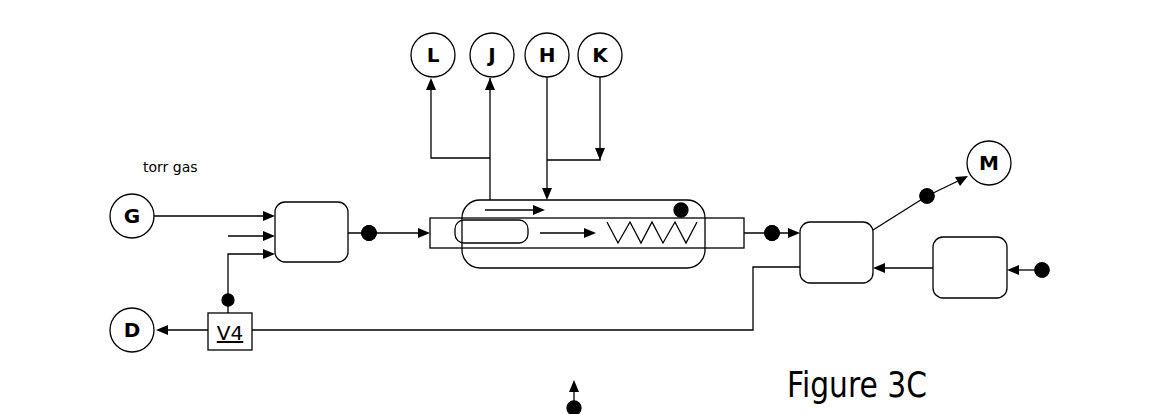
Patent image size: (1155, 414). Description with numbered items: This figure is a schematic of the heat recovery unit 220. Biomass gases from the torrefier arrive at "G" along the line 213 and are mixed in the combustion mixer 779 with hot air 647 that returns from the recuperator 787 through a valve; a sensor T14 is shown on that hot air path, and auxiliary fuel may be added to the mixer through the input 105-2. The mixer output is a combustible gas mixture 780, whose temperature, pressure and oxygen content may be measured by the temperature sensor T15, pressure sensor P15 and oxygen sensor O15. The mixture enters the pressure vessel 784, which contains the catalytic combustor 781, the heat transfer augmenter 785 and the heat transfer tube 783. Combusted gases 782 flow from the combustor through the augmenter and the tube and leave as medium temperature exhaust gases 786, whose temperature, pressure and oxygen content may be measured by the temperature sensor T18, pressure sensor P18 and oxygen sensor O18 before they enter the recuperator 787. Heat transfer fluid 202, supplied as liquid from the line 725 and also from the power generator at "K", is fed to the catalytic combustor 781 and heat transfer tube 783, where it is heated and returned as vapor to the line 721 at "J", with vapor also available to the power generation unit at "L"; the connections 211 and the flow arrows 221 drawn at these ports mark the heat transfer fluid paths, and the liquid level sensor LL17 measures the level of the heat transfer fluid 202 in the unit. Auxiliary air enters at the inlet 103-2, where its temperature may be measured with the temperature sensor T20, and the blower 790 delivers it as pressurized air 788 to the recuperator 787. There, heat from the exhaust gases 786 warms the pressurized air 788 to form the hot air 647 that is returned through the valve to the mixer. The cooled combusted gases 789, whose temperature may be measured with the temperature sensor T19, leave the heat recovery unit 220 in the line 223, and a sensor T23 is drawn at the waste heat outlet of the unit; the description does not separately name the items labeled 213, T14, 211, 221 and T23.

The heat recovery unit 220 is at (96, 76).
The torr gas feed line 213 is at (214, 207).
The input 105-2 is at (221, 236).
The hot air 647 is at (507, 289).
The temperature sensor T14 is at (235, 297).
The combustion mixer 779 is at (311, 232).
The combustible gas mixture 780 is at (389, 241).
The temperature sensor T15 is at (365, 171).
The pressure sensor P15 is at (365, 184).
The oxygen sensor O15 is at (375, 226).
The heat transfer fluid 202 is at (490, 212).
The pressure vessel 784 is at (600, 200).
The heat transfer tube 783 is at (722, 218).
The catalytic combustor 781 is at (510, 247).
The combusted gases 782 is at (567, 240).
The heat transfer augmenter 785 is at (632, 228).
The liquid level sensor LL17 is at (692, 205).
The coolant lines 211 is at (547, 136).
The line 721 is at (460, 124).
The line 725 is at (573, 149).
The flow arrows 221 is at (431, 104).
The temperature sensor T18 is at (766, 154).
The pressure sensor P18 is at (766, 168).
The oxygen sensor O18 is at (780, 222).
The medium temperature exhaust gases 786 is at (772, 246).
The recuperator 787 is at (836, 252).
The cooled combusted gases 789 is at (903, 206).
The line 223 is at (947, 197).
The temperature sensor T19 is at (925, 189).
The pressurized air 788 is at (903, 257).
The blower 790 is at (970, 267).
The inlet 103-2 is at (1049, 270).
The temperature sensor T20 is at (1046, 278).
The temperature sensor T23 is at (567, 408).